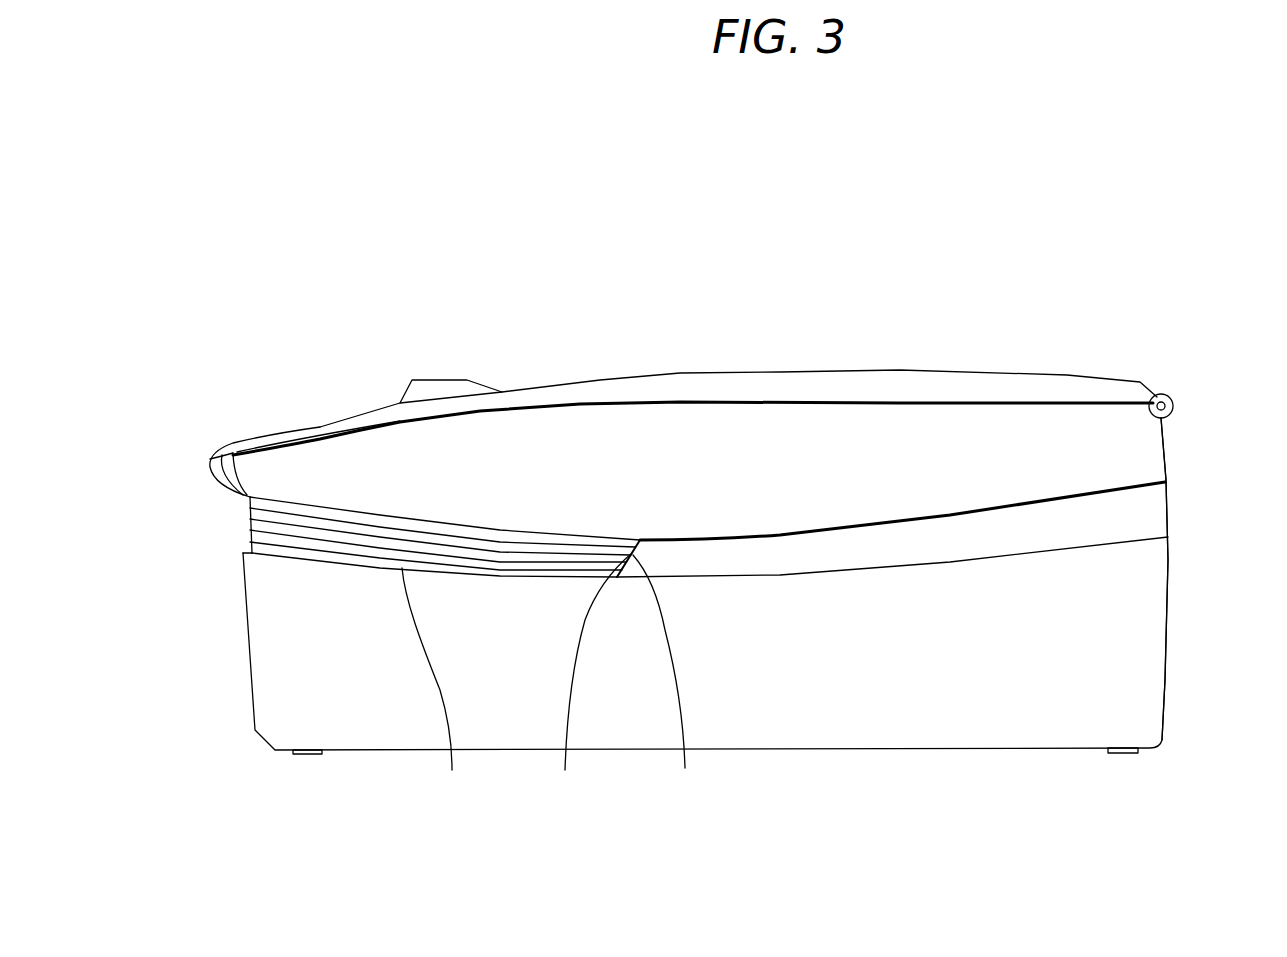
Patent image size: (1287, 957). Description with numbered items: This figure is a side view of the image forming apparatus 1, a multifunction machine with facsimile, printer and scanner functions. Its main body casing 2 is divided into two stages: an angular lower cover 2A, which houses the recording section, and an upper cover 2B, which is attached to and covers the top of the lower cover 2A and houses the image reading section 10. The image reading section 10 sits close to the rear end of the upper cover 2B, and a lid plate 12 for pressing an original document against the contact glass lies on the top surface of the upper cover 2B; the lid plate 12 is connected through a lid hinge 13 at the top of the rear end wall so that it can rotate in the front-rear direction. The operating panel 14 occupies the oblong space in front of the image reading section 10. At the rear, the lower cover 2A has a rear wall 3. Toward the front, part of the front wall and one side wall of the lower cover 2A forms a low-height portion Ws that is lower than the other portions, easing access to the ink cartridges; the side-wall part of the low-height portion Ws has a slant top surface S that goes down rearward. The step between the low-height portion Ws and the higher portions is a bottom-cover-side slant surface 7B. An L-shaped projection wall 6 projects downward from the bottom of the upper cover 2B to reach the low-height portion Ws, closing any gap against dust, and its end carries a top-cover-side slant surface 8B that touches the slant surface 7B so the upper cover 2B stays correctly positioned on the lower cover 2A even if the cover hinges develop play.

The image forming apparatus 1 is at (1178, 280).
The main body casing 2 is at (941, 525).
The lower cover 2A is at (922, 569).
The upper cover 2B is at (1147, 458).
The rear wall 3 is at (1165, 437).
The projection wall 6 is at (425, 543).
The bottom-cover-side slant surface 7B is at (591, 678).
The top-cover-side slant surface 8B is at (666, 679).
The image reading section 10 is at (968, 377).
The lid plate 12 is at (1083, 375).
The lid hinge 13 is at (1173, 400).
The operating panel 14 is at (313, 425).
The slant top surface S is at (430, 684).
The low-height portion Ws is at (307, 583).